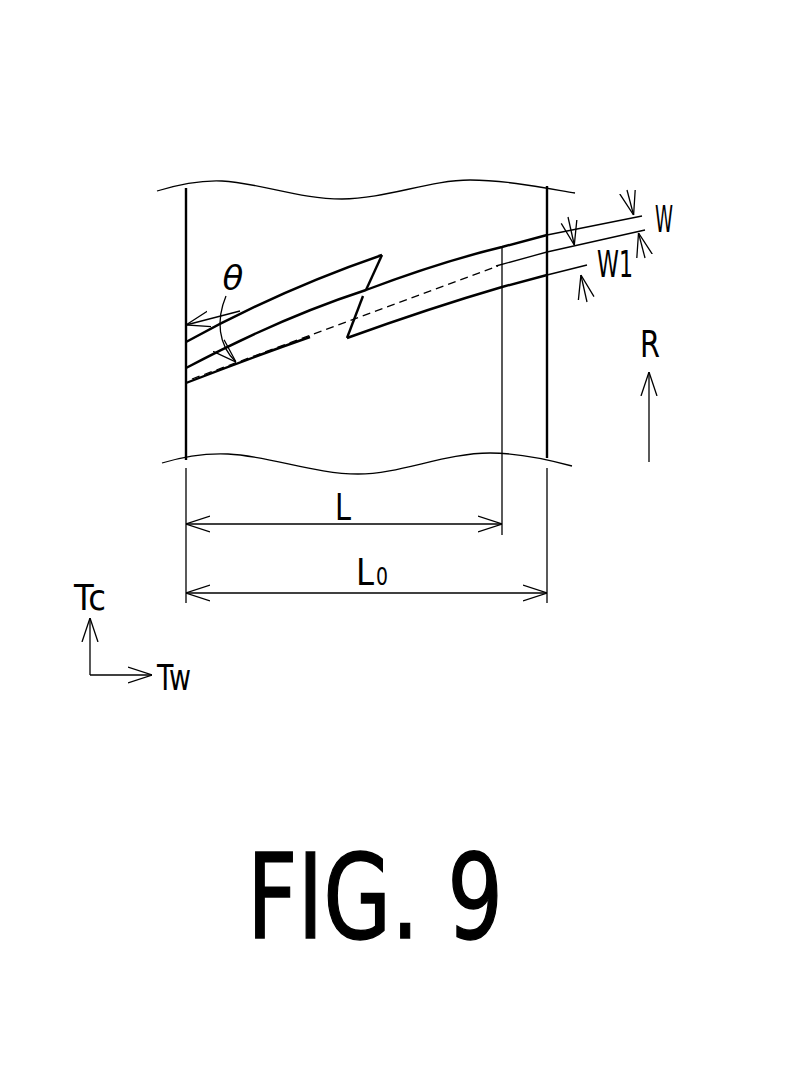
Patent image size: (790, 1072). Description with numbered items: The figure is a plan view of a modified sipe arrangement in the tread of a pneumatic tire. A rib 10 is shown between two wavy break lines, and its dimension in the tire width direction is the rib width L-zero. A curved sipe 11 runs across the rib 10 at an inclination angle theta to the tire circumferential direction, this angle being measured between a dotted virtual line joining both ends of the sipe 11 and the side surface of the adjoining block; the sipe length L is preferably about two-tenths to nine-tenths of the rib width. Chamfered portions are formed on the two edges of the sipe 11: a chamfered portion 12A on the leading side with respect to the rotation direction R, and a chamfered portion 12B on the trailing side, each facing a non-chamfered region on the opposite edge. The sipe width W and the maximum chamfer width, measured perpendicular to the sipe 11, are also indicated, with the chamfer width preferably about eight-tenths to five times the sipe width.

The rib 10 is at (547, 100).
The sipe 11 is at (434, 276).
The chamfered portion on the leading side 12A is at (277, 308).
The chamfered portion on the trailing side 12B is at (440, 290).